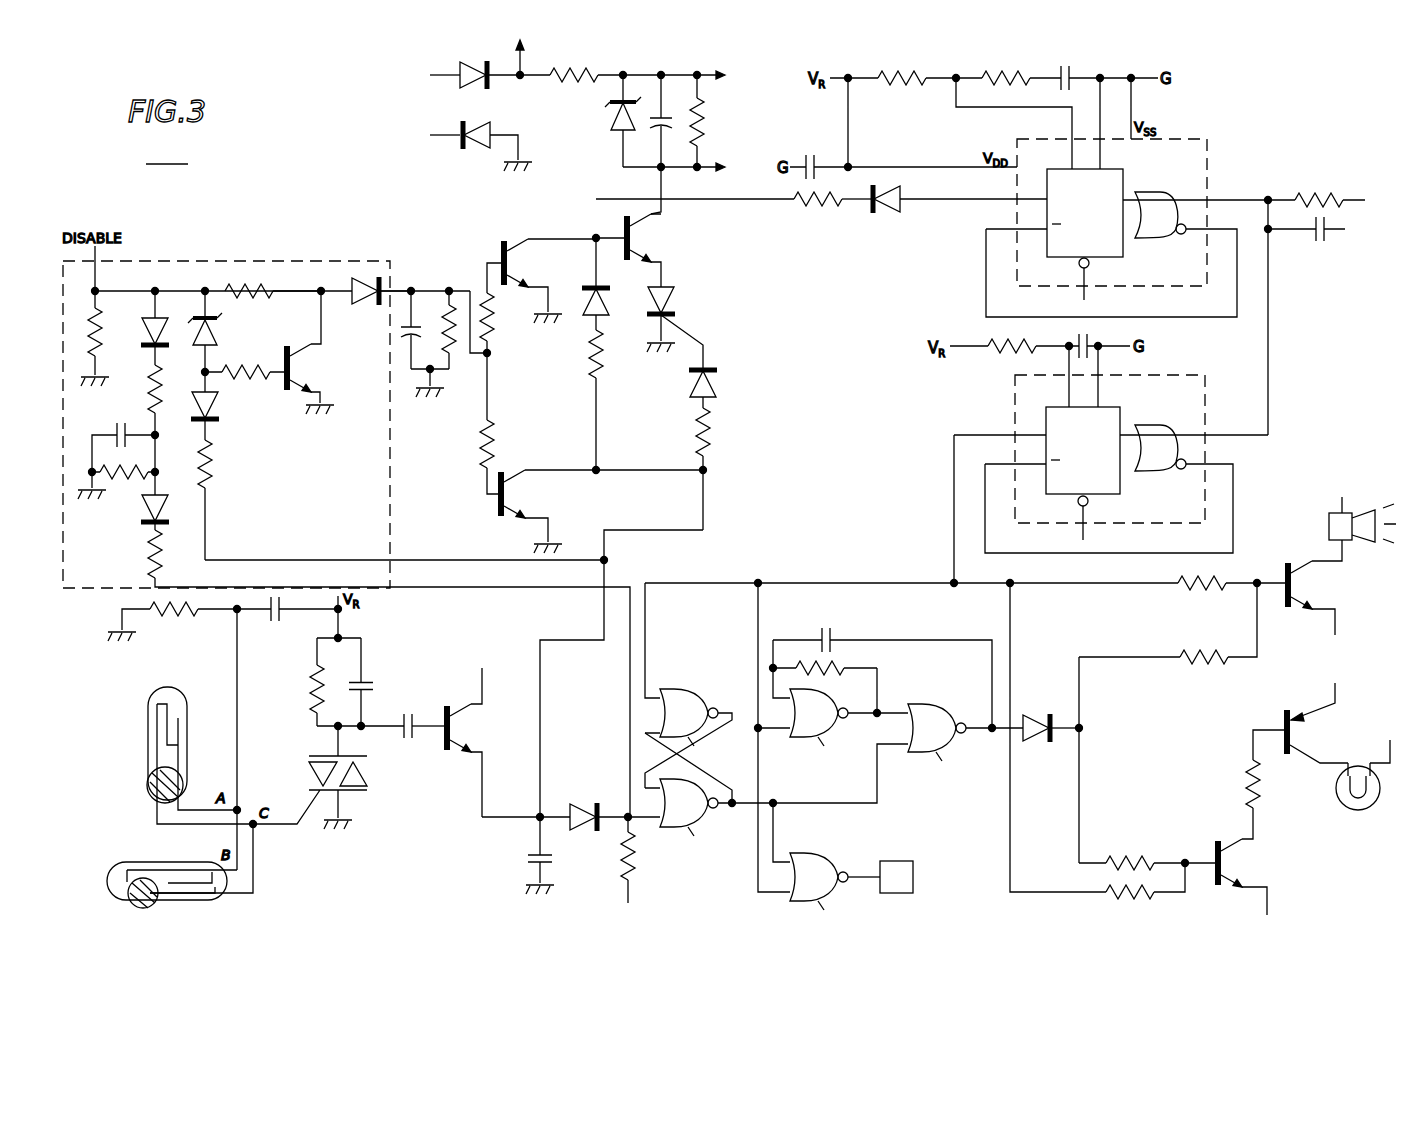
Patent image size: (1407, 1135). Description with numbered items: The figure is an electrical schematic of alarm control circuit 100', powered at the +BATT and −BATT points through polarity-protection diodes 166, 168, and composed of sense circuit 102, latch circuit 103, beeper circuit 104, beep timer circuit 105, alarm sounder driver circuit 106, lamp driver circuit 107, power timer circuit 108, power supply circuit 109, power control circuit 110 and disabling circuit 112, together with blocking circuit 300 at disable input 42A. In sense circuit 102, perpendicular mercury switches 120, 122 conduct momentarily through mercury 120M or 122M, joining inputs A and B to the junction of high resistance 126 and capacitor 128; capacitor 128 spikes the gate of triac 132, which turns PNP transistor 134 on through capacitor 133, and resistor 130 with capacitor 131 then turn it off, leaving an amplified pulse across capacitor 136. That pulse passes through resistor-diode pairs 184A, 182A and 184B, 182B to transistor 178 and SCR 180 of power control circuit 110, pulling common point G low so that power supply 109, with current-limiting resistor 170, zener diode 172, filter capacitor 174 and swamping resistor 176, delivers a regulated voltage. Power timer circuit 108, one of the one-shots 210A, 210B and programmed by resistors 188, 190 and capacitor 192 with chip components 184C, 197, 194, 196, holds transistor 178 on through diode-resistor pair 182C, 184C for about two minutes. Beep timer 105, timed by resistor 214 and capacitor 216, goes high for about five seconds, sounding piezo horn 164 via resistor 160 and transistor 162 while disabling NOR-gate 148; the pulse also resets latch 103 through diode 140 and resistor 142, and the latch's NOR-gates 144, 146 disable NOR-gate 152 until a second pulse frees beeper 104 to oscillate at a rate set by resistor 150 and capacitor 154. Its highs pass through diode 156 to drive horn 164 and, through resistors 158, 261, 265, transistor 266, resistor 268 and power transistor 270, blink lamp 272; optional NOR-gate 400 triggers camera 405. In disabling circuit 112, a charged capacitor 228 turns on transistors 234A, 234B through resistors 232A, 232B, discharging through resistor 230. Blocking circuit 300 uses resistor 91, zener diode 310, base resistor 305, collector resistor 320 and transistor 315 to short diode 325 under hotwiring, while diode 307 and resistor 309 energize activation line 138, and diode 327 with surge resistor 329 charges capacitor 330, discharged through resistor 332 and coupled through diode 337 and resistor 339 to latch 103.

The alarm control circuit 100' is at (167, 153).
The disable input 42A is at (102, 284).
The input impedance programming resistor 91 is at (99, 322).
The sense circuit 102 is at (389, 821).
The latch circuit 103 is at (700, 824).
The beeper circuit 104 is at (936, 824).
The beep timer circuit 105 is at (946, 431).
The alarm sounder driver circuit 106 is at (1312, 492).
The lamp driver circuit 107 is at (1336, 854).
The power timer circuit 108 is at (1020, 248).
The power supply circuit 109 is at (708, 73).
The power control circuit 110 is at (687, 237).
The disabling circuit 112 is at (422, 244).
The mercury switch 120 is at (172, 692).
The mercury 120M is at (150, 782).
The mercury switch 122 is at (134, 866).
The mercury 122M is at (135, 905).
The high resistance 126 is at (163, 618).
The capacitor 128 is at (272, 622).
The resistor 130 is at (310, 690).
The capacitor 131 is at (375, 688).
The triac 132 is at (366, 768).
The capacitor 133 is at (404, 715).
The PNP transistor 134 is at (455, 730).
The capacitor 136 is at (526, 870).
The activation line 138 is at (600, 622).
The diode 140 is at (572, 810).
The resistor 142 is at (634, 866).
The NOR-gate 144 is at (662, 784).
The NOR-gate 146 is at (682, 690).
The NOR-gate 148 is at (828, 694).
The resistor 150 is at (842, 662).
The NOR-gate 152 is at (930, 702).
The capacitor 154 is at (832, 628).
The diode 156 is at (1024, 716).
The resistor 158 is at (1188, 654).
The input resistor 160 is at (1186, 592).
The transistor 162 is at (1296, 588).
The piezo horn 164 is at (1348, 552).
The diode 166 is at (472, 64).
The diode 168 is at (478, 148).
The current-limiting resistor 170 is at (562, 70).
The zener diode 172 is at (612, 114).
The filter capacitor 174 is at (673, 117).
The swamping resistor 176 is at (702, 120).
The transistor 178 is at (641, 233).
The SCR 180 is at (666, 292).
The diode 182A is at (600, 296).
The diode 182B is at (716, 376).
The diode 182C is at (888, 212).
The resistor 184A is at (601, 350).
The resistor 184B is at (716, 446).
The resistor 184C is at (798, 208).
The resistor 188 is at (888, 74).
The resistor 190 is at (1000, 74).
The capacitor 192 is at (1072, 74).
The resistor 194 is at (1338, 192).
The capacitor 196 is at (1310, 242).
The capacitor 197 is at (806, 156).
The one-shot 210A is at (1212, 178).
The one-shot 210B is at (1209, 393).
The resistor 214 is at (1010, 340).
The capacitor 216 is at (1088, 340).
The capacitor 228 is at (420, 298).
The resistor 230 is at (460, 298).
The resistor 232A is at (492, 322).
The resistor 232B is at (494, 440).
The transistor 234A is at (516, 264).
The transistor 234B is at (516, 496).
The resistor 261 is at (1124, 904).
The resistor 265 is at (1120, 856).
The transistor 266 is at (1216, 842).
The resistor 268 is at (1250, 780).
The power transistor 270 is at (1282, 716).
The lamp 272 is at (1336, 786).
The blocking circuit 300 is at (66, 596).
The base resistor 305 is at (226, 368).
The diode 307 is at (212, 407).
The resistor 309 is at (215, 480).
The zener diode 310 is at (213, 337).
The NPN transistor 315 is at (302, 376).
The collector resistor 320 is at (226, 292).
The diode 325 is at (358, 282).
The diode 327 is at (160, 330).
The surge limiting resistor 329 is at (162, 434).
The capacitor 330 is at (130, 420).
The resistor 332 is at (99, 472).
The diode 337 is at (162, 524).
The resistor 339 is at (162, 574).
The NOR-gate 400 is at (805, 852).
The camera 405 is at (884, 858).